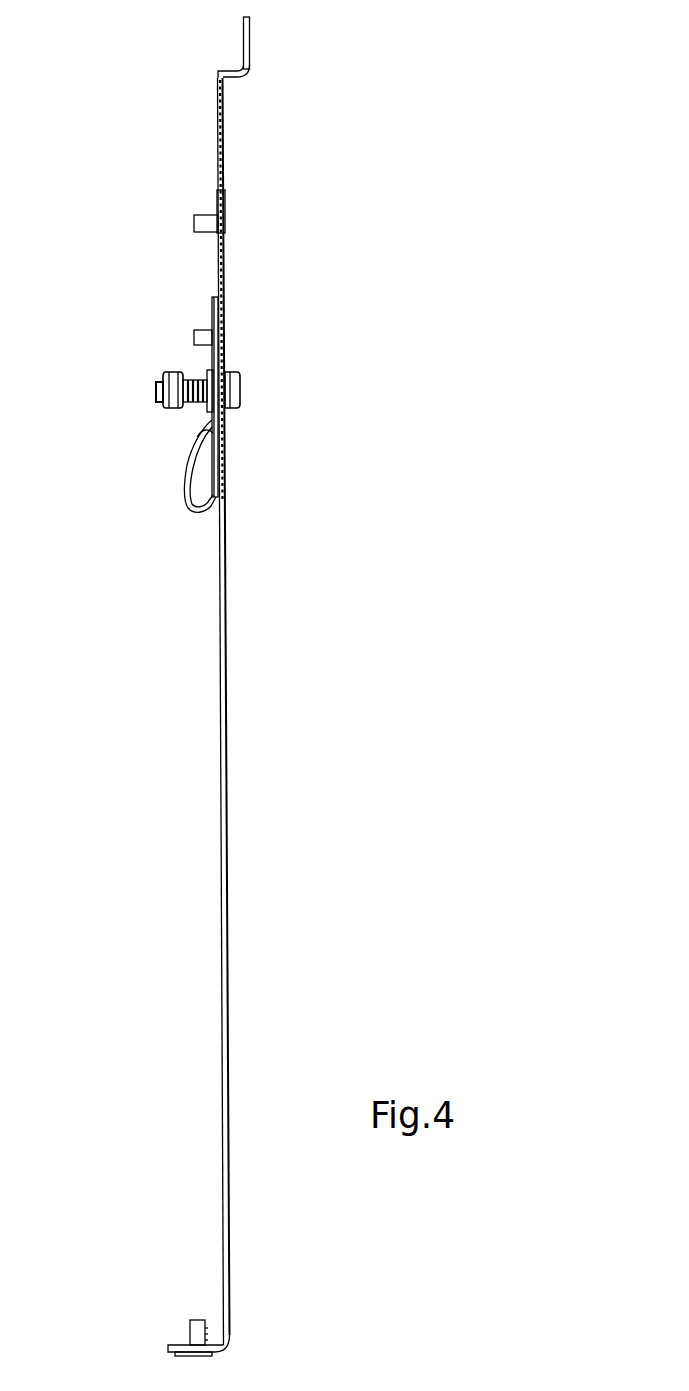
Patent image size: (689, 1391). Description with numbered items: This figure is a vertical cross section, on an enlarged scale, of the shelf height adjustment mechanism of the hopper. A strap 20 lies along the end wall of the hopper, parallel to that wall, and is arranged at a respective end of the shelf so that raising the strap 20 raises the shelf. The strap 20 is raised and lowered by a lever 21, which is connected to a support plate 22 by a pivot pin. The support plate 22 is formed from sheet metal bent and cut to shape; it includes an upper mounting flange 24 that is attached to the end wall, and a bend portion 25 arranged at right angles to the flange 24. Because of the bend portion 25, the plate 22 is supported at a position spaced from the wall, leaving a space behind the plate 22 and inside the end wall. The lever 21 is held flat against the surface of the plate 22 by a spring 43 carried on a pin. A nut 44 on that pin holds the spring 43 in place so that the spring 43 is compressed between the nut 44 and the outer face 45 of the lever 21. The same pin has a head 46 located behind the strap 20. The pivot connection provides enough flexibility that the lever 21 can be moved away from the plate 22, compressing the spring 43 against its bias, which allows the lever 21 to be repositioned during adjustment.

The strap 20 is at (224, 663).
The lever 21 is at (217, 307).
The support plate 22 is at (222, 157).
The upper mounting flange 24 is at (250, 31).
The bend portion 25 is at (232, 76).
The spring 43 is at (193, 412).
The nut 44 is at (173, 372).
The outer face 45 is at (197, 437).
The head 46 is at (235, 372).